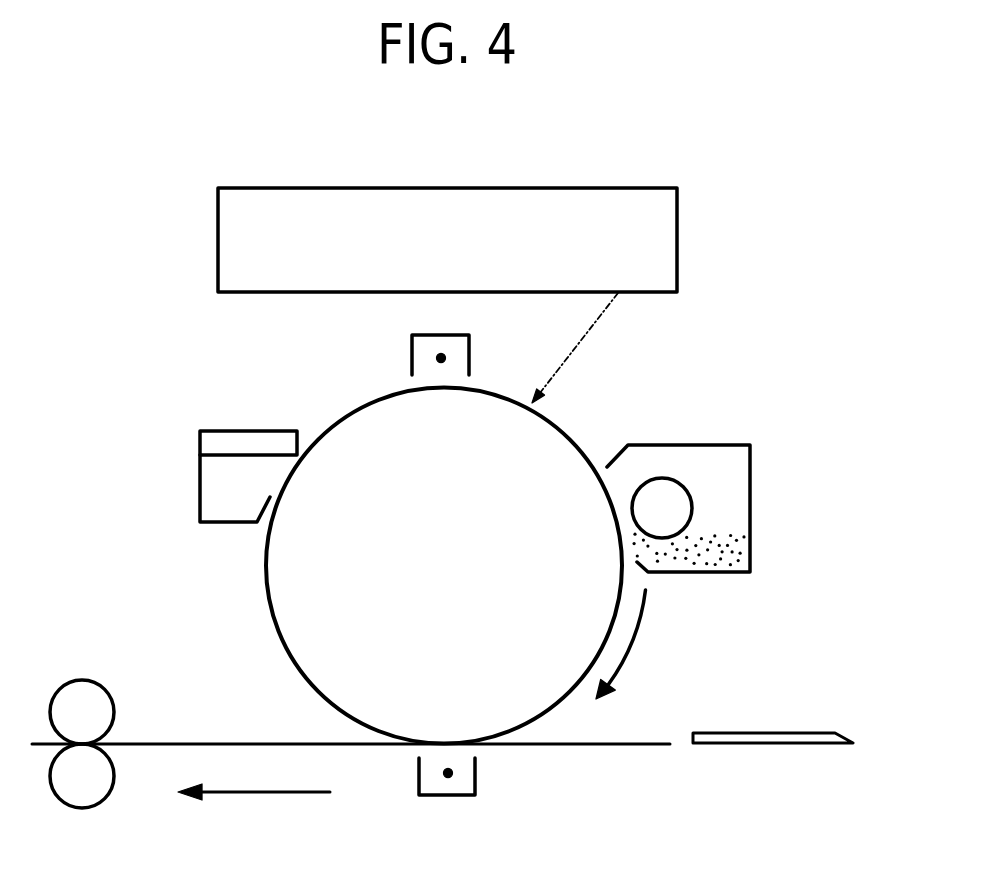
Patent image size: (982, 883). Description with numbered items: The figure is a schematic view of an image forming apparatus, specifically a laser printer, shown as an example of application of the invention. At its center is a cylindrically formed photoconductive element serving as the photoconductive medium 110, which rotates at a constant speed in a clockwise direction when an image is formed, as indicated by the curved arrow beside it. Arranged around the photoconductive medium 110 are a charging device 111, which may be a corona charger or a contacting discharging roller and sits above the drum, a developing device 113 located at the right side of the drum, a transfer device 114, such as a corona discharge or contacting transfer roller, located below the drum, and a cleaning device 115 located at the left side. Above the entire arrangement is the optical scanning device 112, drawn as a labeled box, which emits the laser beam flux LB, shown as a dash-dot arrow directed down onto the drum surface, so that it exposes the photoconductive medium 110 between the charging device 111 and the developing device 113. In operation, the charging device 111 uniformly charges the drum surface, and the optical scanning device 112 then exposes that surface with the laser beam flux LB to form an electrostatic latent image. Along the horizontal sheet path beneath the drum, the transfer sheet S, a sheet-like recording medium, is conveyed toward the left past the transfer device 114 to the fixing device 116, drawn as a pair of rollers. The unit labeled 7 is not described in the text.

The image forming unit 7 is at (570, 437).
The photoconductive medium 110 is at (265, 594).
The charging device 111 is at (412, 353).
The optical scanning device 112 is at (677, 242).
The developing device 113 is at (750, 515).
The transfer device 114 is at (448, 795).
The cleaning device 115 is at (200, 478).
The fixing device 116 is at (100, 807).
The laser beam flux LB is at (583, 337).
The transfer sheet S is at (763, 745).